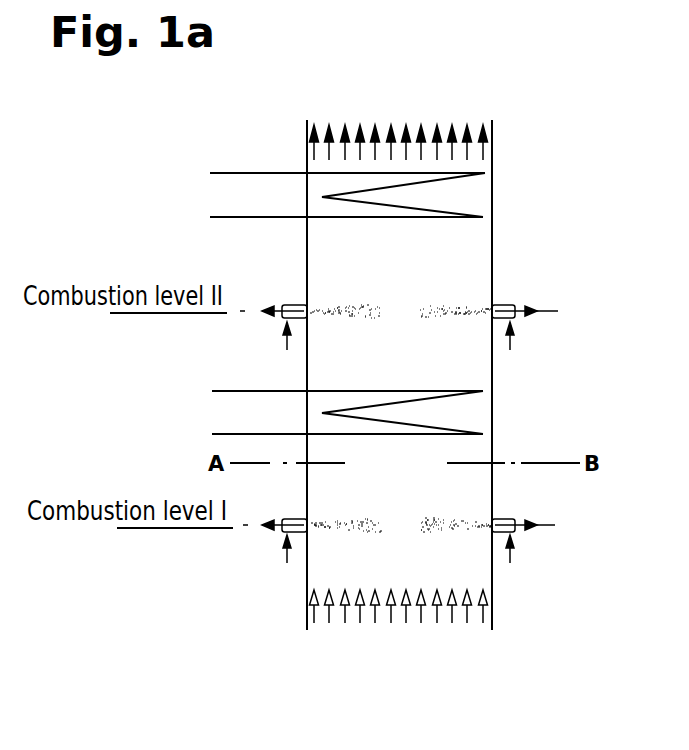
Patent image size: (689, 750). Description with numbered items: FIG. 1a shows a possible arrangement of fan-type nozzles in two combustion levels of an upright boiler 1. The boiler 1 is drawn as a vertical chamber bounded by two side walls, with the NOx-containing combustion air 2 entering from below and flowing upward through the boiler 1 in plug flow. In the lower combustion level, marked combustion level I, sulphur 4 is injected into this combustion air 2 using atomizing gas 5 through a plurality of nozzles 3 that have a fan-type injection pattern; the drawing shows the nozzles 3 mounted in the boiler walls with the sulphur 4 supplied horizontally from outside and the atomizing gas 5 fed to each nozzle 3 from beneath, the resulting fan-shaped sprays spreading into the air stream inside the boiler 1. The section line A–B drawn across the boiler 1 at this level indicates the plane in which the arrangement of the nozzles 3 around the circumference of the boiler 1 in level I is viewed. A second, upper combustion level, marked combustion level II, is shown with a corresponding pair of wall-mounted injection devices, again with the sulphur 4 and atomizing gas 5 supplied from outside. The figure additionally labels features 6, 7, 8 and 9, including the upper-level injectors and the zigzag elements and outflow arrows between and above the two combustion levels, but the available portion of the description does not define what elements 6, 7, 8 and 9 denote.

The upright boiler 1 is at (307, 577).
The combustion air 2 is at (424, 610).
The nozzles 3 is at (503, 517).
The sulphur 4 is at (545, 308).
The atomizing gas 5 is at (512, 343).
The intermediate heat exchanger 6 is at (250, 390).
The upper heat exchanger 7 is at (250, 172).
The upper burner nozzle 8 is at (502, 303).
The flue gas outlet flow 9 is at (408, 145).